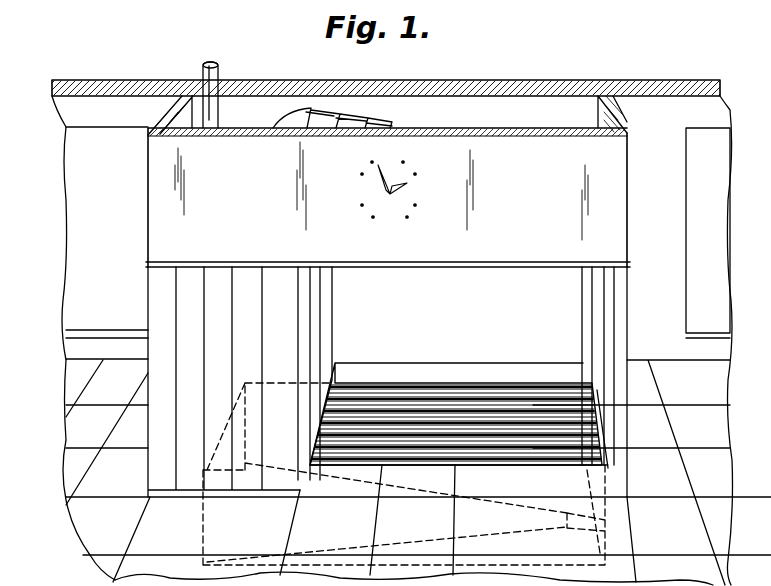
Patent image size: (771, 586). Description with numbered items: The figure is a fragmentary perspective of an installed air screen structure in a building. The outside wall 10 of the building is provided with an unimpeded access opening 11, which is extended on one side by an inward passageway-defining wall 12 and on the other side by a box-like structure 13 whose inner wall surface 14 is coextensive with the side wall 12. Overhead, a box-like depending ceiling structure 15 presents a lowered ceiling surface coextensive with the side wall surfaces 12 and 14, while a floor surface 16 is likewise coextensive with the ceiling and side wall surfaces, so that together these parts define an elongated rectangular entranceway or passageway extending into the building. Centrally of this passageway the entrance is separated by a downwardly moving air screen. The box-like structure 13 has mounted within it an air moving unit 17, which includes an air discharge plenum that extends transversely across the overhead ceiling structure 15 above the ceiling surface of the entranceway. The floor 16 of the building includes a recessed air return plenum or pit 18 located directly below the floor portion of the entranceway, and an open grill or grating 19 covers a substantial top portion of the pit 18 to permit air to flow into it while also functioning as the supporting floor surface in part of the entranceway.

The outside wall 10 is at (660, 80).
The access opening 11 is at (483, 273).
The passageway-defining wall 12 is at (630, 312).
The box-like structure 13 is at (150, 297).
The inner wall surface 14 is at (308, 330).
The depending ceiling structure 15 is at (627, 186).
The floor surface 16 is at (402, 366).
The air moving unit 17 is at (261, 125).
The air return plenum or pit 18 is at (605, 527).
The grill or grating 19 is at (500, 383).